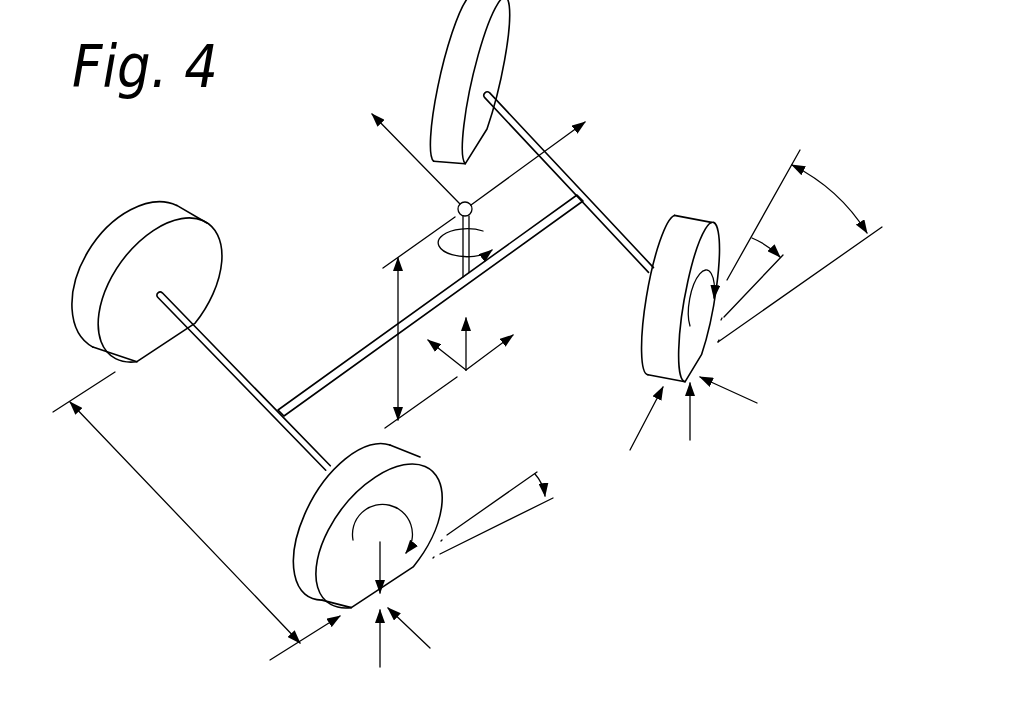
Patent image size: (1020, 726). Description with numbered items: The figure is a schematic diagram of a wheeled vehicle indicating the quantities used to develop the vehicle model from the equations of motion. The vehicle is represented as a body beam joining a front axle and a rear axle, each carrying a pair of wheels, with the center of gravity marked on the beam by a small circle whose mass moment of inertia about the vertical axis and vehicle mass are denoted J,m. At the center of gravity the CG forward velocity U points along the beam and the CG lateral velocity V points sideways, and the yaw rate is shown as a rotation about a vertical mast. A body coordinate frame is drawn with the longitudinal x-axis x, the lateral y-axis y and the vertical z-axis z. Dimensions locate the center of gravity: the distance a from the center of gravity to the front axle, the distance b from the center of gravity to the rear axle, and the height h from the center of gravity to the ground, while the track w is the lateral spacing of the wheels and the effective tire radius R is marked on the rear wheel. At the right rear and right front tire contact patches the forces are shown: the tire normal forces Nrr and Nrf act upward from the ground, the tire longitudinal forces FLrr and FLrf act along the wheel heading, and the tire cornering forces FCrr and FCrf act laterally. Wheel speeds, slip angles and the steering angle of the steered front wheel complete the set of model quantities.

The CG lateral velocity V is at (400, 159).
The CG forward velocity U is at (540, 155).
The mass moment of inertia of the vehicle about the z-axis and vehicle mass J,m is at (428, 238).
The distance from CG to front axle a is at (430, 305).
The distance from CG to rear axle b is at (339, 345).
The distance from CG to ground h is at (414, 322).
The x-axis x is at (498, 346).
The y-axis y is at (436, 349).
The z-axis z is at (467, 330).
The track w is at (176, 507).
The effective tire radius R is at (365, 567).
The tire normal force (right rear) Nrr is at (386, 656).
The tire normal force (right front) Nrf is at (696, 429).
The tire longitudinal force (right rear) FLrr is at (285, 650).
The tire longitudinal force (right front) FLrf is at (623, 418).
The tire cornering force (right rear) FCrr is at (431, 640).
The tire cornering force (right front) FCrf is at (753, 404).